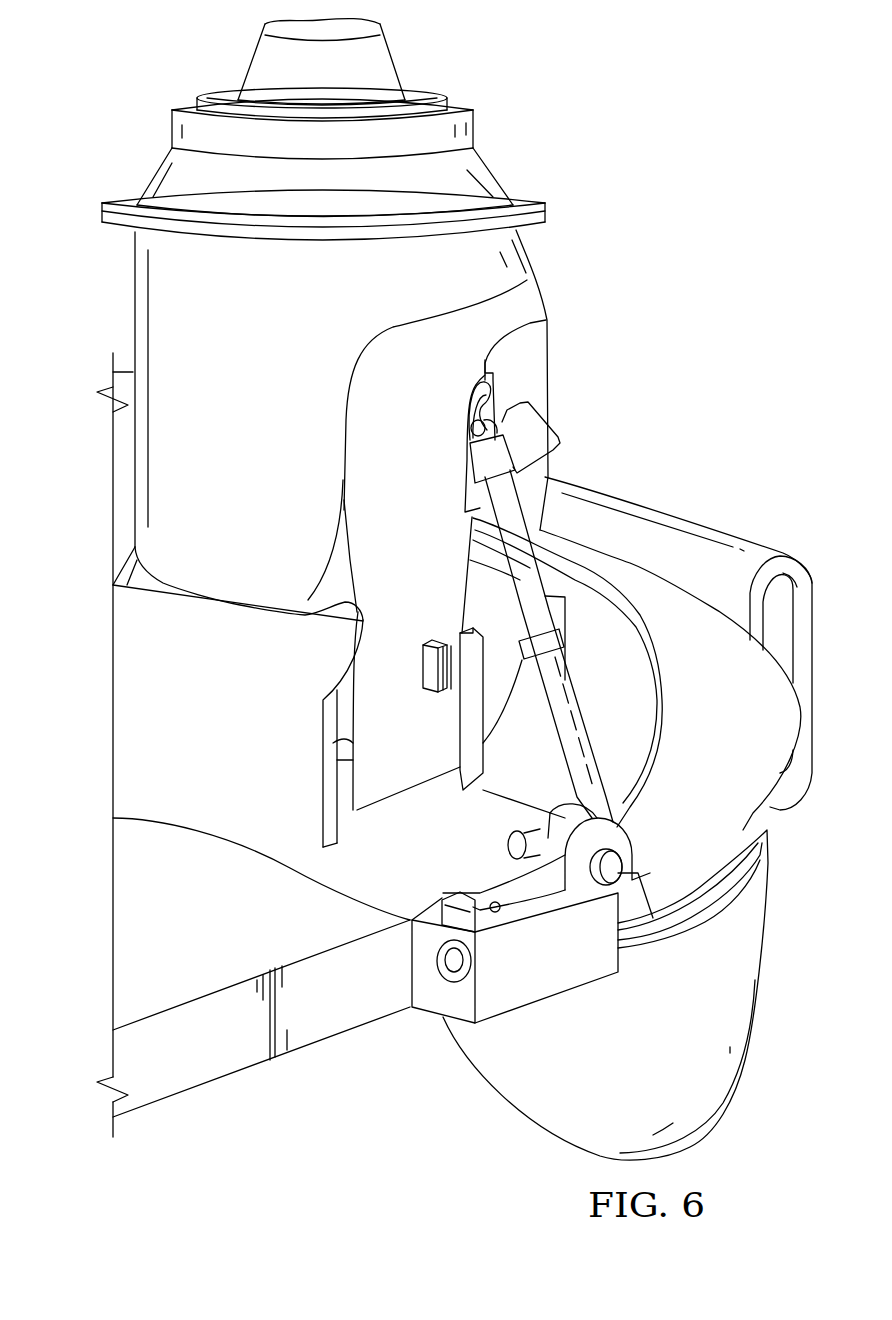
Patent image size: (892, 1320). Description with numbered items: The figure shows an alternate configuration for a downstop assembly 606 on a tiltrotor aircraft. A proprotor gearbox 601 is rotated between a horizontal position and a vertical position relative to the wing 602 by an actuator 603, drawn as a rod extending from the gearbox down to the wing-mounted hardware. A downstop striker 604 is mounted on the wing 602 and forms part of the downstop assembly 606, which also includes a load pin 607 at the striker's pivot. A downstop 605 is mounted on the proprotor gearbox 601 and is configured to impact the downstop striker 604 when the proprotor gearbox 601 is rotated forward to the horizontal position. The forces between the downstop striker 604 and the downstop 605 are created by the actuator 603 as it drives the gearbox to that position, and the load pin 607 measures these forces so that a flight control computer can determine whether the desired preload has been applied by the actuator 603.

The proprotor gearbox 601 is at (133, 290).
The wing 602 is at (197, 1087).
The actuator 603 is at (567, 717).
The downstop striker 604 is at (628, 806).
The downstop 605 is at (440, 642).
The downstop assembly 606 is at (490, 867).
The load pin 607 is at (510, 842).